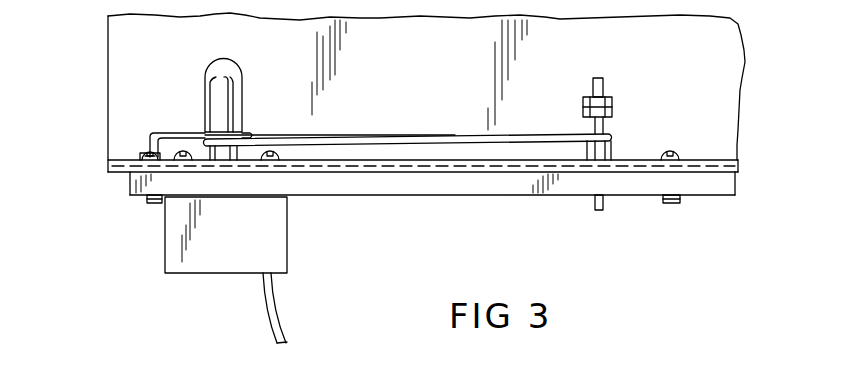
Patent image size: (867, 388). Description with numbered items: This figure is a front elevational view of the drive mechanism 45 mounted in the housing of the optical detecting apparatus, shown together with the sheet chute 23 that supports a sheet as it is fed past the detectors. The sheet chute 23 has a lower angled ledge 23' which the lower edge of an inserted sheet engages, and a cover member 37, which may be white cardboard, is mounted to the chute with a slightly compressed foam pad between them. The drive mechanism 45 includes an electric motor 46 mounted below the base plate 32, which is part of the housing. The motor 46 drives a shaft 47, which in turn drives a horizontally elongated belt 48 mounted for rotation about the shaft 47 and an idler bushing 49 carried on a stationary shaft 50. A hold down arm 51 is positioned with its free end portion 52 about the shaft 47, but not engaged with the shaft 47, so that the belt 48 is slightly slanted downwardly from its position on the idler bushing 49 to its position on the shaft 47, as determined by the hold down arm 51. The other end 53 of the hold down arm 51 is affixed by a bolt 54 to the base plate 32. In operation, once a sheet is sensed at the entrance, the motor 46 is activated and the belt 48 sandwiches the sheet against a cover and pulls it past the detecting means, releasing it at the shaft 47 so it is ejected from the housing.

The sheet chute 23 is at (406, 92).
The lower angled ledge 23' is at (423, 196).
The base plate 32 is at (448, 187).
The cover member 37 is at (214, 70).
The drive mechanism 45 is at (249, 97).
The electric motor 46 is at (226, 270).
The shaft 47 is at (223, 153).
The belt 48 is at (387, 140).
The idler bushing 49 is at (612, 112).
The stationary shaft 50 is at (603, 80).
The hold down arm 51 is at (172, 132).
The free end portion 52 is at (248, 133).
The other end 53 is at (145, 151).
The bolt 54 is at (147, 151).